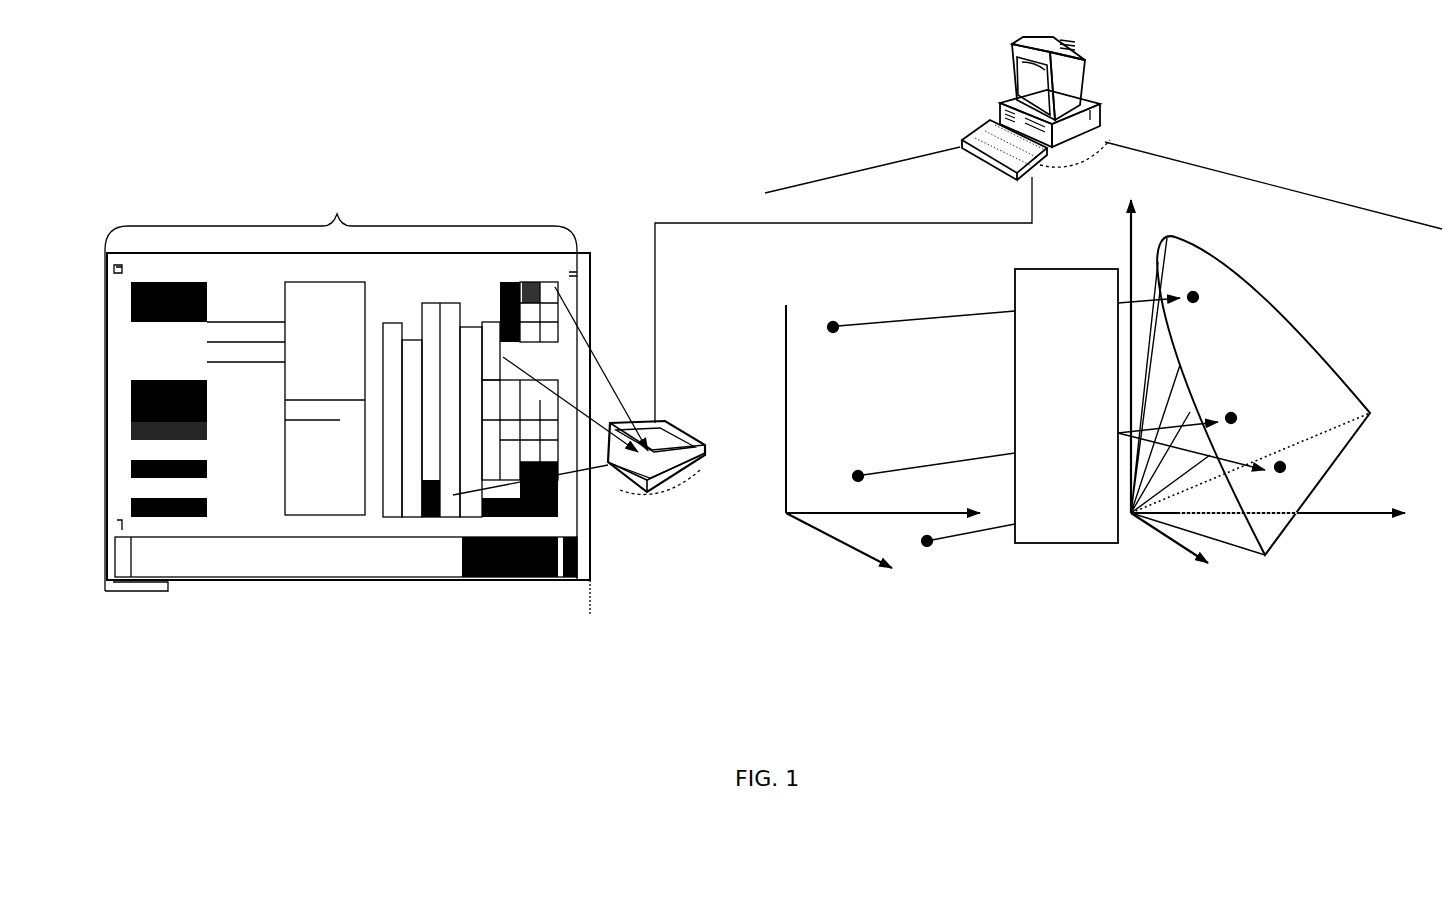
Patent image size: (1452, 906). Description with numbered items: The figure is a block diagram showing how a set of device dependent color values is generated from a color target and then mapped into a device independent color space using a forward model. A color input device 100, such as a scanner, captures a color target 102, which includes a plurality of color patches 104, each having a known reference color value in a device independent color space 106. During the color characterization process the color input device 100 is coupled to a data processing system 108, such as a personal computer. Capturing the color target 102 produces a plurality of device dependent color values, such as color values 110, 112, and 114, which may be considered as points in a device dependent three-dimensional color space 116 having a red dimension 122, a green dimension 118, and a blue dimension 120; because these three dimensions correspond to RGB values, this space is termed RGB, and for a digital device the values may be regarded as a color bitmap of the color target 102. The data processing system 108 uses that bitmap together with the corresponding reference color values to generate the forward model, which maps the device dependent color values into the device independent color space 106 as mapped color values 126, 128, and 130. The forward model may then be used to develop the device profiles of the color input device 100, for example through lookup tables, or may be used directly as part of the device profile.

The color input device 100 is at (658, 422).
The color target 102 is at (522, 580).
The color patches 104 is at (345, 426).
The device independent color space 106 is at (1278, 404).
The data processing system 108 is at (1010, 90).
The color value 110 is at (835, 333).
The color value 112 is at (858, 470).
The color value 114 is at (925, 544).
The device dependent three-dimensional color space 116 is at (893, 442).
The green dimension 118 is at (887, 513).
The blue dimension 120 is at (829, 536).
The red dimension 122 is at (788, 322).
The mapped color value 126 is at (1194, 304).
The mapped color value 128 is at (1236, 422).
The mapped color value 130 is at (1282, 474).